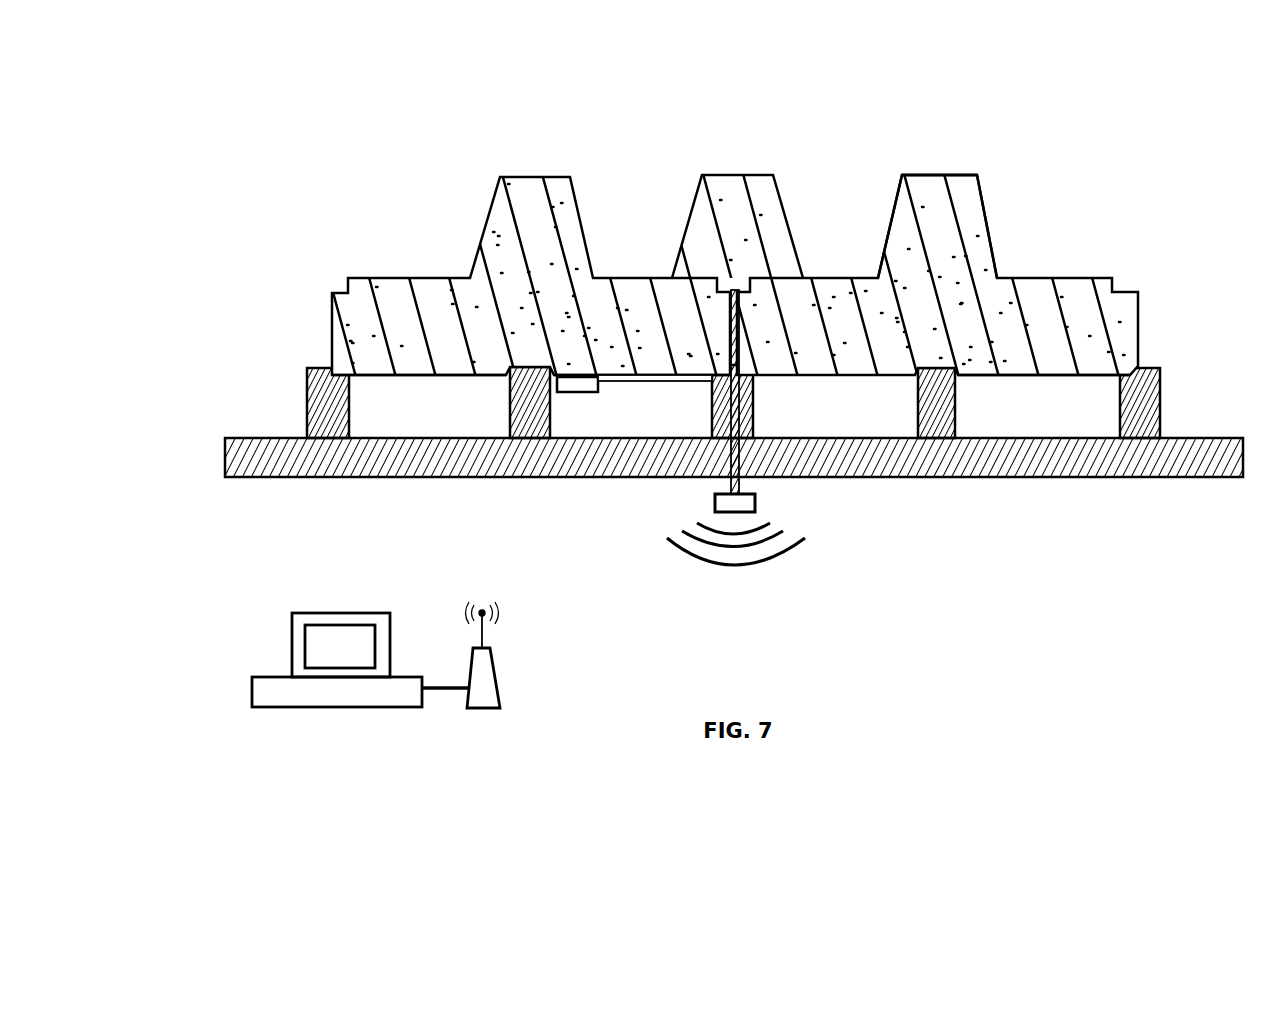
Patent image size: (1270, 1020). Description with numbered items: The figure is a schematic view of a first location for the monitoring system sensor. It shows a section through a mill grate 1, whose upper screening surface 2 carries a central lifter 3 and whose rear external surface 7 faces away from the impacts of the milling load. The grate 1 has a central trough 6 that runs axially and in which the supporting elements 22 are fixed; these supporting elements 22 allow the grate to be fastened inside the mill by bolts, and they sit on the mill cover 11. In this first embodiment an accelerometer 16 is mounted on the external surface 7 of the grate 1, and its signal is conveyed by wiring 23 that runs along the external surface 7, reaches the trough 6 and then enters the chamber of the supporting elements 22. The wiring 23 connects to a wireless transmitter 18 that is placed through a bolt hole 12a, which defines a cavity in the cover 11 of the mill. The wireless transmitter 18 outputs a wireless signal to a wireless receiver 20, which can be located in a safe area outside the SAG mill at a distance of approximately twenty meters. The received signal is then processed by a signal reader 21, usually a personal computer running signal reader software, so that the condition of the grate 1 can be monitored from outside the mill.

The grate 1 is at (1073, 307).
The screening surface 2 is at (842, 273).
The central lifter 3 is at (965, 212).
The central trough 6 is at (496, 395).
The external surface 7 is at (1043, 377).
The cover 11 is at (913, 478).
The bolt hole 12a is at (792, 478).
The accelerometer 16 is at (585, 378).
The wireless transmitter 18 is at (735, 512).
The wireless receiver 20 is at (487, 683).
The signal reader 21 is at (293, 635).
The supporting elements 22 is at (306, 413).
The wiring 23 is at (660, 380).